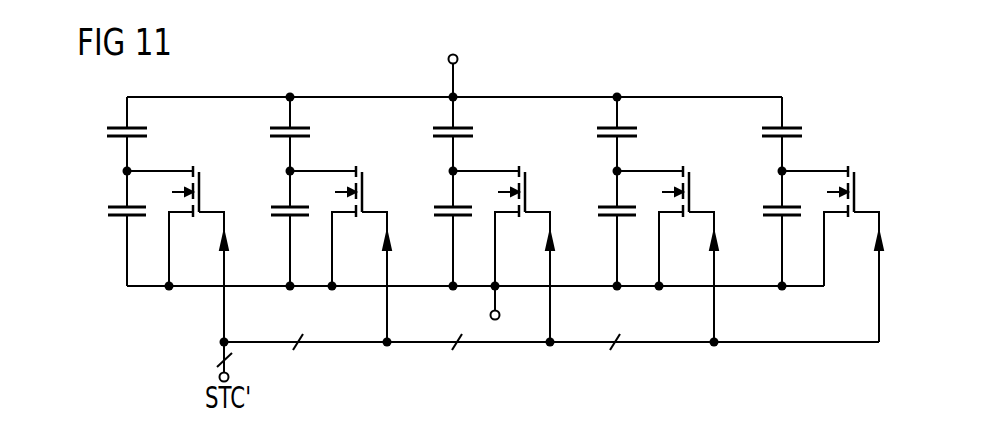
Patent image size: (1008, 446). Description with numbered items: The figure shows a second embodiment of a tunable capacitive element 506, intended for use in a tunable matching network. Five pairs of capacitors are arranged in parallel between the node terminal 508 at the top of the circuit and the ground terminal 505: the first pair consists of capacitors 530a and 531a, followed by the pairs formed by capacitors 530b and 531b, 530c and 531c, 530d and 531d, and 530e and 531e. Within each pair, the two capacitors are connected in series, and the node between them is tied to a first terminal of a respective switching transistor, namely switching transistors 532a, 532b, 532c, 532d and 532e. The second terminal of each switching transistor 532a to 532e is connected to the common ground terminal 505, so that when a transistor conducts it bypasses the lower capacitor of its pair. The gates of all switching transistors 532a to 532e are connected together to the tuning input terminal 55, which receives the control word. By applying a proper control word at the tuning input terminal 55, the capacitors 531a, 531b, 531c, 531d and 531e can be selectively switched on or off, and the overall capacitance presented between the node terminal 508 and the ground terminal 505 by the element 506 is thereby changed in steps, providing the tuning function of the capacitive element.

The tunable capacitive element 506 is at (810, 72).
The node terminal 508 is at (458, 59).
The ground terminal 505 is at (490, 315).
The tuning input terminal 55 is at (229, 377).
The capacitor 530a is at (148, 130).
The capacitor 530b is at (311, 130).
The capacitor 530c is at (474, 130).
The capacitor 530d is at (638, 130).
The capacitor 530e is at (803, 130).
The capacitor 531a is at (115, 218).
The capacitor 531b is at (278, 218).
The capacitor 531c is at (441, 218).
The capacitor 531d is at (605, 218).
The capacitor 531e is at (770, 218).
The switching transistor 532a is at (200, 186).
The switching transistor 532b is at (363, 186).
The switching transistor 532c is at (526, 186).
The switching transistor 532d is at (690, 186).
The switching transistor 532e is at (852, 216).